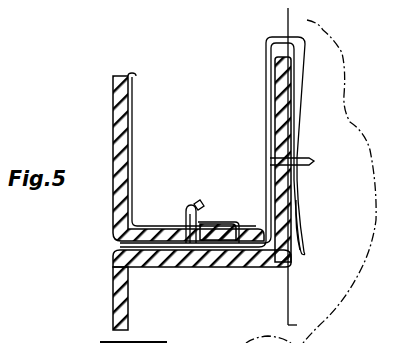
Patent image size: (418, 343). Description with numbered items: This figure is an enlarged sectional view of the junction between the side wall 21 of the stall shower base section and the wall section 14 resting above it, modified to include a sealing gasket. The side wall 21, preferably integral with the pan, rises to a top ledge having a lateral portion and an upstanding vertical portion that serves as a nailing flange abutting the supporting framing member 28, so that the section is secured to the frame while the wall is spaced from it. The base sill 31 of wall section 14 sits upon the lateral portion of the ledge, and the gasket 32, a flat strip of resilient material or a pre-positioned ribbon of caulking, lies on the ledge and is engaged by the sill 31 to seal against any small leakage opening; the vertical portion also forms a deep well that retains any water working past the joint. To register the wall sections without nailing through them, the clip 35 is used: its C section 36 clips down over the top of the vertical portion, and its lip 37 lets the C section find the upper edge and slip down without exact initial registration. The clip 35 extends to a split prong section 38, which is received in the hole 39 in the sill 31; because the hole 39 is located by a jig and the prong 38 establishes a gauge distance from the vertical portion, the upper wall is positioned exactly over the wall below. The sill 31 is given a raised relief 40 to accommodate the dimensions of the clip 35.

The wall section 14 is at (131, 91).
The side wall 21 is at (129, 302).
The framing member 28 is at (318, 337).
The base sill 31 is at (149, 224).
The gasket 32 is at (127, 252).
The clip 35 is at (305, 120).
The C section 36 is at (302, 58).
The lip 37 is at (300, 239).
The split prong section 38 is at (193, 199).
The hole 39 is at (206, 222).
The raised relief 40 is at (230, 222).